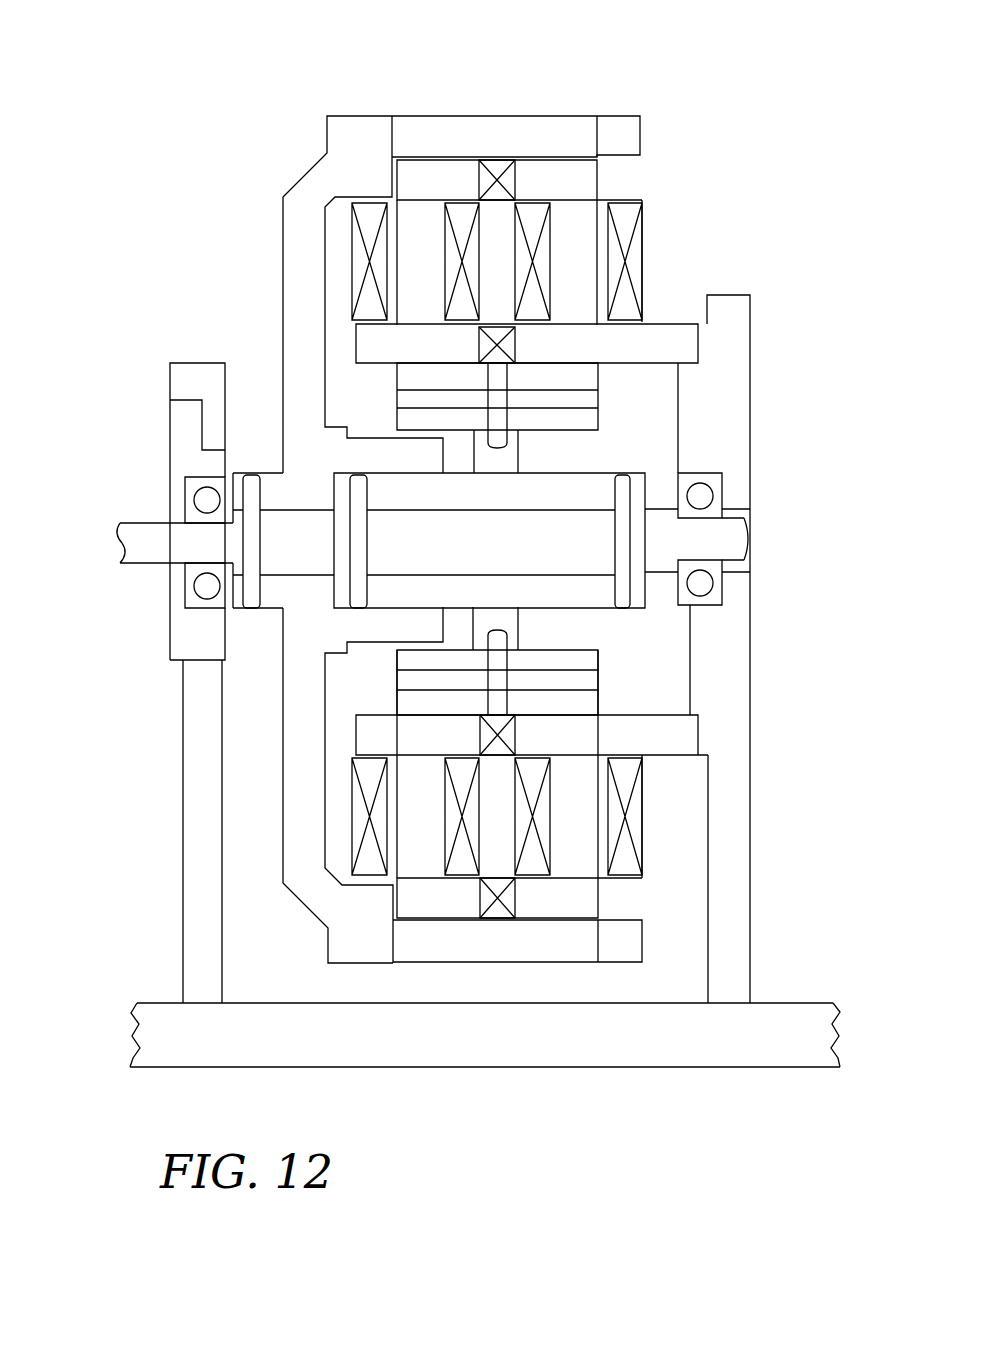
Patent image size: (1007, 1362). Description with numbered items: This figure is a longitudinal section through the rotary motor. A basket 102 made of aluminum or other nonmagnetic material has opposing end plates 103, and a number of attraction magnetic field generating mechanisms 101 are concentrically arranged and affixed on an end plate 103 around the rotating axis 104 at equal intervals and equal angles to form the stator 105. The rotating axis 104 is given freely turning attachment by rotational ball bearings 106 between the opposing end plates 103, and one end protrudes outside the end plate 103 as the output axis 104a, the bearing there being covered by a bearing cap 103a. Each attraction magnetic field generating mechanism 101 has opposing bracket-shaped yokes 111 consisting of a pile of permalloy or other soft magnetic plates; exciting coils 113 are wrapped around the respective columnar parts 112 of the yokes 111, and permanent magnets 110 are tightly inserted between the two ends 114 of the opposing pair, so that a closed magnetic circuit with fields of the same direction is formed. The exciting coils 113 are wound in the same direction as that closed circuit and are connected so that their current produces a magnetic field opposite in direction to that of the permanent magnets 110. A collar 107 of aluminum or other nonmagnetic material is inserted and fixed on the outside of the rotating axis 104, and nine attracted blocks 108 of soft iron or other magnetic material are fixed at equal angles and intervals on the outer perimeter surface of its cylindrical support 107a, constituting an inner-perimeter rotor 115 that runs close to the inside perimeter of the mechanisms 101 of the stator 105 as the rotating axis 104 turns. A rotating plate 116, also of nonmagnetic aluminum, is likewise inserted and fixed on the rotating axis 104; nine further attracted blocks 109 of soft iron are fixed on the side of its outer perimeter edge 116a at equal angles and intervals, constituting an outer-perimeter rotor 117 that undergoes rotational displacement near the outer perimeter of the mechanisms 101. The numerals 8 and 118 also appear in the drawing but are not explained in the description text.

The housing 8 is at (335, 708).
The attraction magnetic field generating mechanism 101 is at (665, 248).
The basket 102 is at (497, 1047).
The end plate 103 is at (752, 798).
The bearing cap 103a is at (178, 656).
The rotating axis 104 is at (540, 562).
The output axis 104a is at (157, 553).
The stator 105 is at (670, 195).
The rotational ball bearing 106 is at (190, 485).
The collar 107 is at (500, 505).
The cylindrical support 107a is at (418, 430).
The attracted block 108 is at (587, 372).
The attracted block 109 is at (598, 1018).
The permanent magnet 110 is at (492, 180).
The yoke 111 is at (615, 170).
The columnar part 112 is at (418, 238).
The exciting coil 113 is at (637, 283).
The end 114 is at (507, 160).
The inner-perimeter rotor 115 is at (345, 672).
The rotating plate 116 is at (222, 795).
The outer perimeter edge 116a is at (353, 930).
The outer-perimeter rotor 117 is at (662, 117).
The gap 118 is at (243, 982).